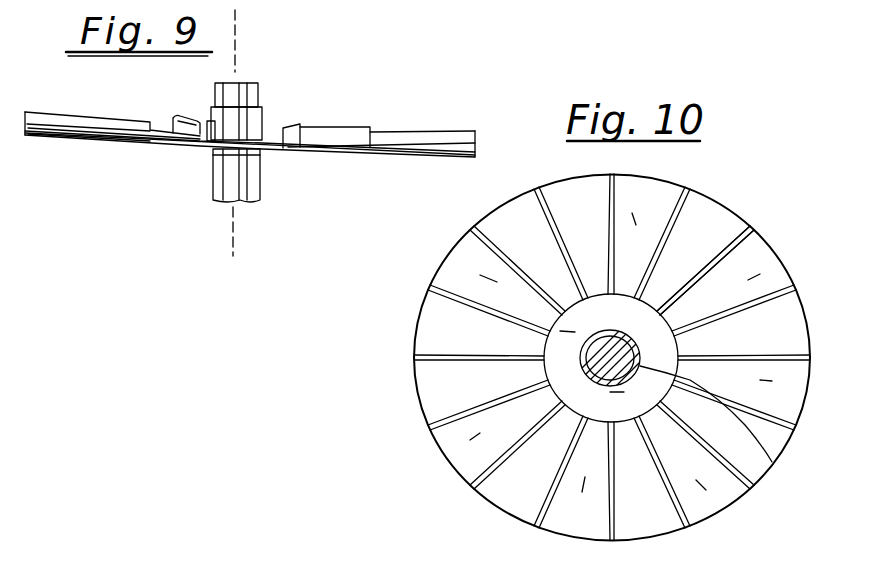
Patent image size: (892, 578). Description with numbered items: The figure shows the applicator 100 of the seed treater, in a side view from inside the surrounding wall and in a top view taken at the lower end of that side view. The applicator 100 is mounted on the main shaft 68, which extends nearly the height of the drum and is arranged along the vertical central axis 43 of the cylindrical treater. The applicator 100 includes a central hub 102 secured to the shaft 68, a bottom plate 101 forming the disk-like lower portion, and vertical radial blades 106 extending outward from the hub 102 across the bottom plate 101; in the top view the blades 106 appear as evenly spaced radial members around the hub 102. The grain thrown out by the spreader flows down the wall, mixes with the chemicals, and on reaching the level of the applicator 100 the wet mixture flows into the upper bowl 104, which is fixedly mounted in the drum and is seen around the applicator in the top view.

In FIG. 9, the central axis 43 is at (231, 244).
In FIG. 9, the main shaft 68 is at (262, 176).
In FIG. 10, the main shaft 68 is at (604, 331).
In FIG. 9, the applicator 100 is at (131, 149).
In FIG. 10, the applicator 100 is at (752, 223).
In FIG. 9, the bottom plate 101 is at (163, 150).
In FIG. 9, the central hub 102 is at (262, 121).
In FIG. 10, the central hub 102 is at (772, 462).
In FIG. 9, the upper bowl 104 is at (385, 158).
In FIG. 10, the upper bowl 104 is at (428, 324).
In FIG. 9, the vertical radial blades 106 is at (417, 134).
In FIG. 10, the vertical radial blades 106 is at (783, 357).